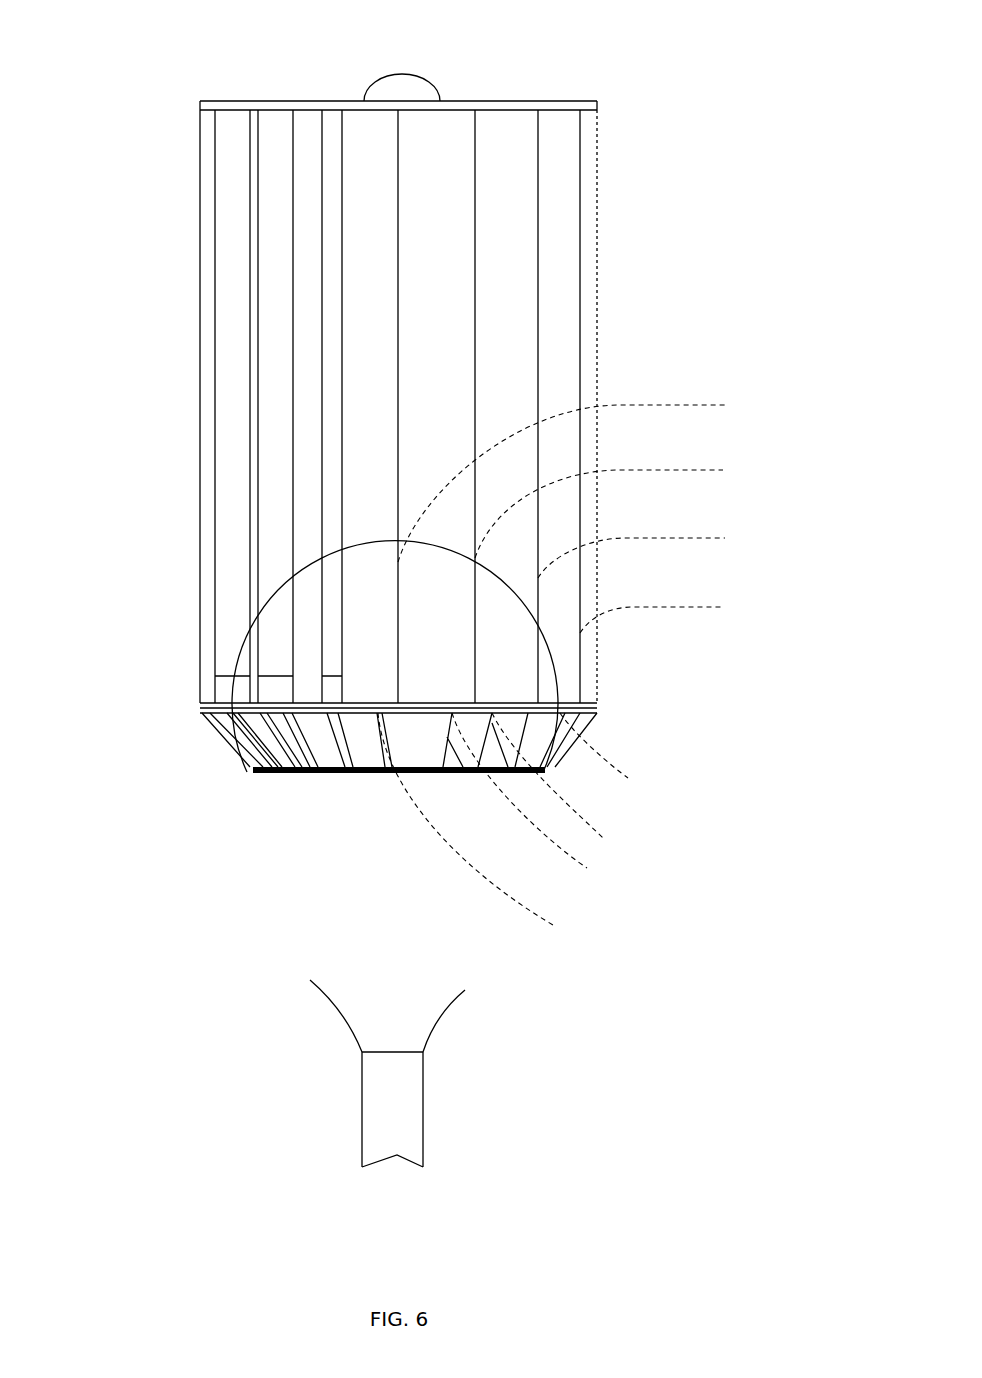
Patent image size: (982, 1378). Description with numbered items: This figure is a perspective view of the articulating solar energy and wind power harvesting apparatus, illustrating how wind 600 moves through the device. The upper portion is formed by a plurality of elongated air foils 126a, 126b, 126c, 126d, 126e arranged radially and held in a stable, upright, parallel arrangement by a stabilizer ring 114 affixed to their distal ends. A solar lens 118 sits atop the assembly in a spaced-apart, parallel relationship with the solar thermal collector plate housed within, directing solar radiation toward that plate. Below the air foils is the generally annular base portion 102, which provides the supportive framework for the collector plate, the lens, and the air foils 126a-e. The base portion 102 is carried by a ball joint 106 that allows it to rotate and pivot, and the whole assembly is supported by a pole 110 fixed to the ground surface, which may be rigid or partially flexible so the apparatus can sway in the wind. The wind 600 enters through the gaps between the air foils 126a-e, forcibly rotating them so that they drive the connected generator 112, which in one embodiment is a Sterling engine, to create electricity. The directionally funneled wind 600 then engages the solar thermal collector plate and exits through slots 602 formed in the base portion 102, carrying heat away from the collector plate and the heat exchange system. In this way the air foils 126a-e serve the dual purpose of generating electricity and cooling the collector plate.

The base portion 102 is at (200, 736).
The ball joint 106 is at (238, 885).
The pole 110 is at (358, 1095).
The generator 112 is at (440, 1025).
The stabilizer ring 114 is at (225, 107).
The solar lens 118 is at (395, 82).
The air foil 126a is at (563, 242).
The air foil 126b is at (503, 197).
The air foil 126c is at (378, 438).
The air foil 126d is at (307, 512).
The air foil 126e is at (235, 574).
The wind 600 is at (727, 605).
The slots 602 is at (575, 722).